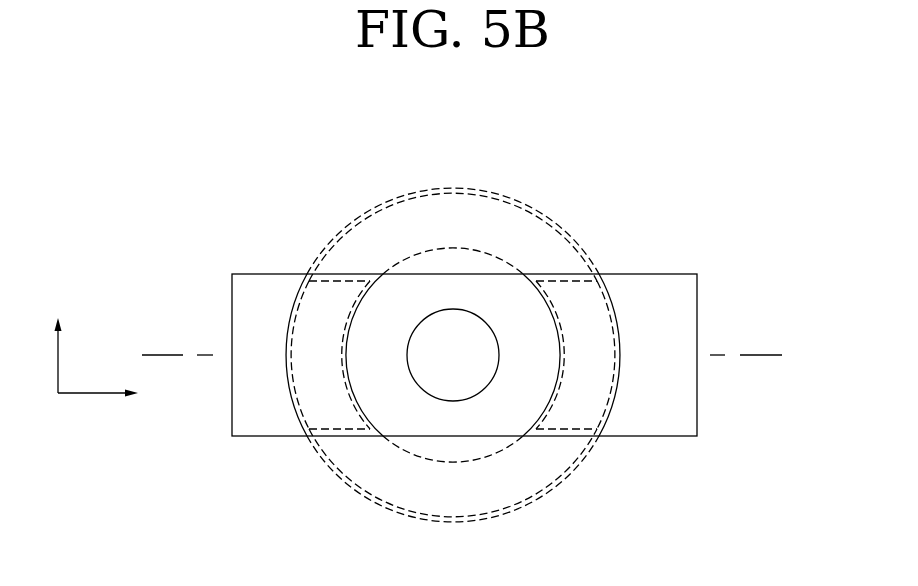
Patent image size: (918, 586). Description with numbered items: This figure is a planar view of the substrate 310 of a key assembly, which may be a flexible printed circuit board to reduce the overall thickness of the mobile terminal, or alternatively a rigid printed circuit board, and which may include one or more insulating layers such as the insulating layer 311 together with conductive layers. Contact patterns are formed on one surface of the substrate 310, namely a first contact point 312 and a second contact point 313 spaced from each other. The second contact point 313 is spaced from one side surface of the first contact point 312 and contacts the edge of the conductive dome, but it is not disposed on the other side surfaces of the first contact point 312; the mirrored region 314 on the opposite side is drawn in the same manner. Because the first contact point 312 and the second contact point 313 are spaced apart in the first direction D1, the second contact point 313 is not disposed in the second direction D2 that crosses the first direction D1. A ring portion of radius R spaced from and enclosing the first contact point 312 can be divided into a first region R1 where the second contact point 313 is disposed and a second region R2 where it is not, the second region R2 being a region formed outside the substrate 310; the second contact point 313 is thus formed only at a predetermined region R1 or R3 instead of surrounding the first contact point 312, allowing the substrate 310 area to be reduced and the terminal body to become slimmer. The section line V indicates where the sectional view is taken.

The substrate 310 is at (502, 341).
The insulating layer 311 is at (697, 415).
The first contact point 312 is at (454, 320).
The second contact point 313 is at (600, 312).
The second electrode pad region 314 is at (308, 312).
The outer radius R is at (553, 213).
The first region R1 is at (603, 398).
The second region R2 is at (356, 217).
The predetermined region R3 is at (303, 398).
The line V- V is at (461, 356).
The first direction D1 is at (112, 395).
The second direction D2 is at (60, 340).